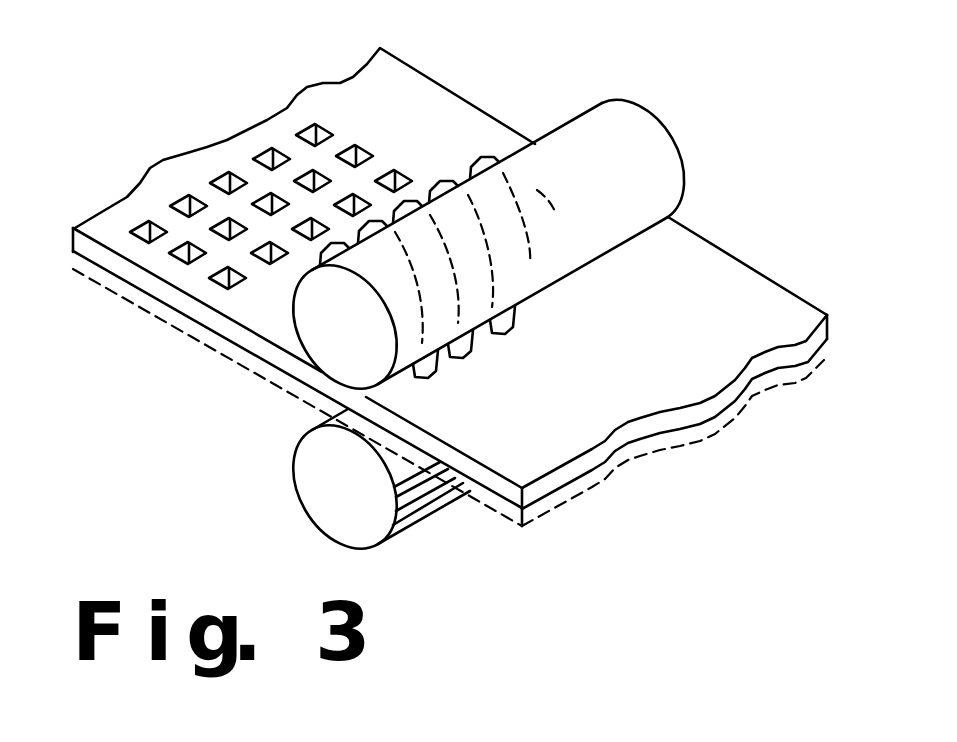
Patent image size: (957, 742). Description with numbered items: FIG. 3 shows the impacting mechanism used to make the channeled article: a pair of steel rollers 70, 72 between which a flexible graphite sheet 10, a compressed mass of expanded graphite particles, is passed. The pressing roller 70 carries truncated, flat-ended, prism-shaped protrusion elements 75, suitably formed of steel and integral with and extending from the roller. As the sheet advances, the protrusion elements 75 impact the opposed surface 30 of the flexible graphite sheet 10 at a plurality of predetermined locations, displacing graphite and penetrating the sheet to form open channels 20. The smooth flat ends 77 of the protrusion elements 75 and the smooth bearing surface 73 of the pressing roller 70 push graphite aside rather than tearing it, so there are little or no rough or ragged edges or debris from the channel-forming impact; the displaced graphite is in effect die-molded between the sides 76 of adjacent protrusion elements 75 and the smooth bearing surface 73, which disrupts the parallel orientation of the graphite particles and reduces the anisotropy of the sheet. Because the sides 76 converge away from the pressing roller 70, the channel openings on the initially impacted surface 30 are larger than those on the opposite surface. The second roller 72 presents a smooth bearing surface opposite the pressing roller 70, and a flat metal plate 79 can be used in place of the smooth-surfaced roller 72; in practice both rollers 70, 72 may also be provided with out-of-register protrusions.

The flexible graphite sheet 10 is at (744, 266).
The channels 20 is at (228, 176).
The opposed surface 30 is at (448, 130).
The pressing roller 70 is at (628, 130).
The roller 72 is at (327, 458).
The smooth bearing surface 73 is at (435, 202).
The protrusion elements 75 is at (476, 178).
The converging sides of protrusion elements 76 is at (492, 163).
The smooth flat ends of protrusion elements 77 is at (224, 355).
The flat metal plate 79 is at (620, 450).